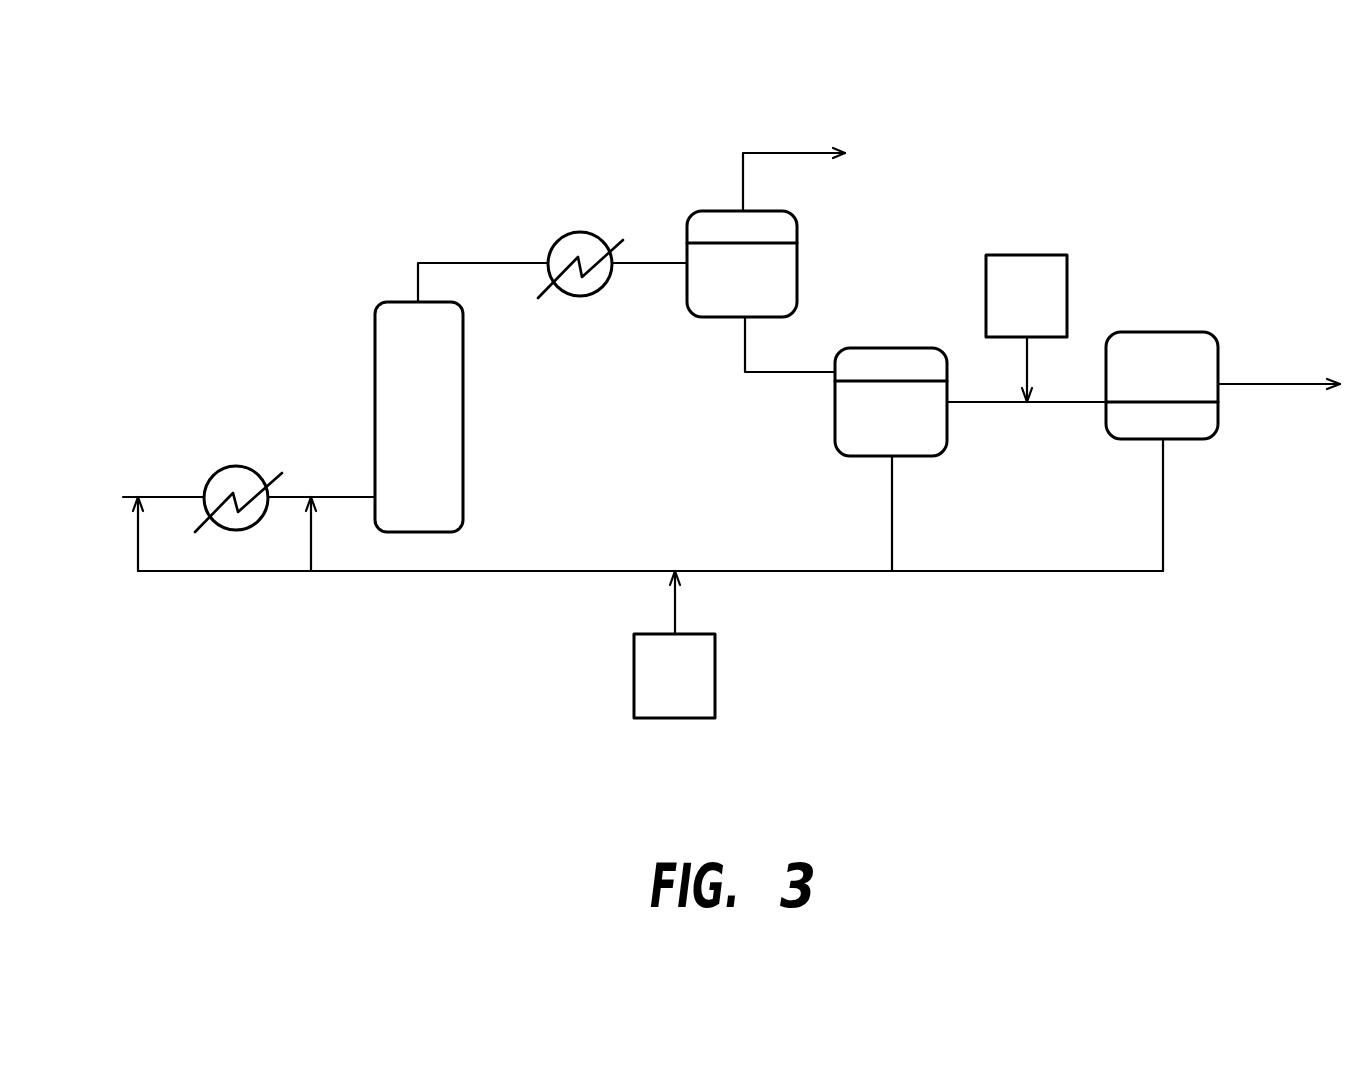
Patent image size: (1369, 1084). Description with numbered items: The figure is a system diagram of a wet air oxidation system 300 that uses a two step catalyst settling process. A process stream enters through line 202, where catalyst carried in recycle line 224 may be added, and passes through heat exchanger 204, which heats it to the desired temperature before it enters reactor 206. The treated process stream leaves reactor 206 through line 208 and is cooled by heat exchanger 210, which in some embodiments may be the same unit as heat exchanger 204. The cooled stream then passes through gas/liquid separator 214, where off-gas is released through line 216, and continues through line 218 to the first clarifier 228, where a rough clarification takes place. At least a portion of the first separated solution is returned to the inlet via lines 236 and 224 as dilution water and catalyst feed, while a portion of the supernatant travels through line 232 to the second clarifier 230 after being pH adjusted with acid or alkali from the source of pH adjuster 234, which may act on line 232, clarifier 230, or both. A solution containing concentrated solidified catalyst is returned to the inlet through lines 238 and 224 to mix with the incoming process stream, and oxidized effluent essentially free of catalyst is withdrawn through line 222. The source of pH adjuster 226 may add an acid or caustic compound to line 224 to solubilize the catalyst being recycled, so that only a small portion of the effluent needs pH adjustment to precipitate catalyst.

The system 300 is at (290, 196).
The line 202 is at (157, 497).
The heat exchanger 204 is at (232, 468).
The reactor 206 is at (380, 303).
The line 208 is at (483, 262).
The heat exchanger 210 is at (578, 232).
The gas/liquid separator 214 is at (800, 262).
The line 216 is at (741, 183).
The line 218 is at (815, 373).
The first clarifier 228 is at (840, 452).
The line 232 is at (1075, 402).
The source of pH adjuster 234 is at (1043, 255).
The second clarifier 230 is at (1168, 332).
The line 222 is at (1245, 384).
The line 238 is at (1165, 508).
The line 236 is at (890, 538).
The line 224 is at (958, 571).
The source of pH adjuster 226 is at (715, 634).